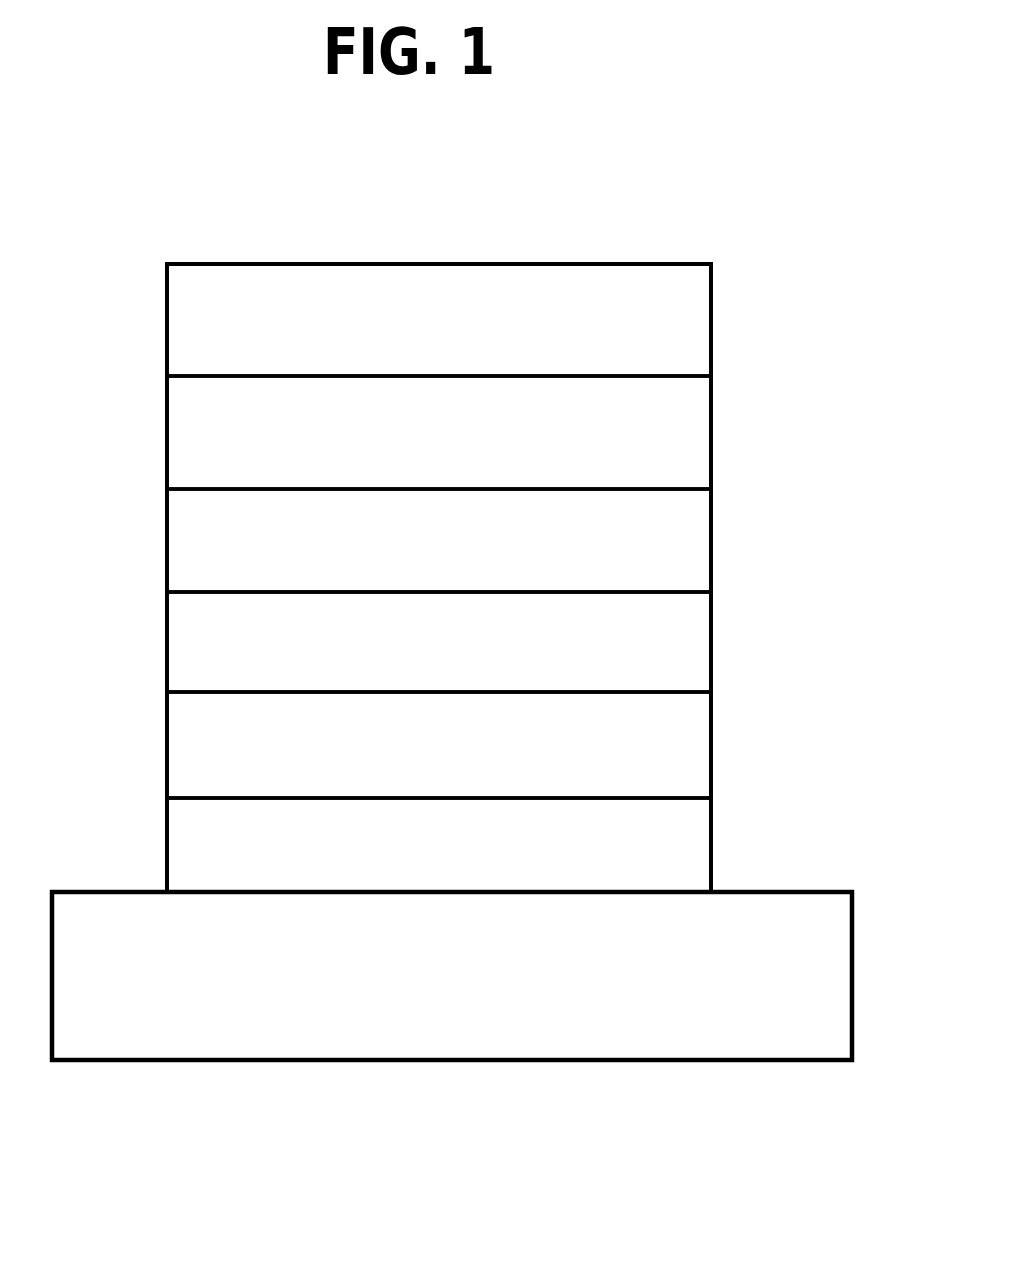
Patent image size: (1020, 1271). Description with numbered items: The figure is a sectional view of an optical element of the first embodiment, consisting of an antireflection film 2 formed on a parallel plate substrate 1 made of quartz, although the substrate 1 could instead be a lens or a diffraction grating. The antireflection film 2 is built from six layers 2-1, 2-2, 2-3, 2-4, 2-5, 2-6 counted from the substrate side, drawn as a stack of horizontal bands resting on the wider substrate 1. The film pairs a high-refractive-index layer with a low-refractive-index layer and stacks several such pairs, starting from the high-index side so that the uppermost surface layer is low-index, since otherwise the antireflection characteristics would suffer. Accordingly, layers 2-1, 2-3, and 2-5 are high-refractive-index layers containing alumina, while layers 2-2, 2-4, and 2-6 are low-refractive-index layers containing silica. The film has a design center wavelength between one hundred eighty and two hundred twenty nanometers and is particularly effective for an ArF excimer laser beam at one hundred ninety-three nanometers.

The substrate 1 is at (820, 965).
The antireflection film 2 is at (767, 562).
The first layer 2-1 is at (186, 839).
The second layer 2-2 is at (186, 734).
The third layer 2-3 is at (186, 632).
The fourth layer 2-4 is at (186, 531).
The fifth layer 2-5 is at (186, 427).
The sixth layer 2-6 is at (186, 316).